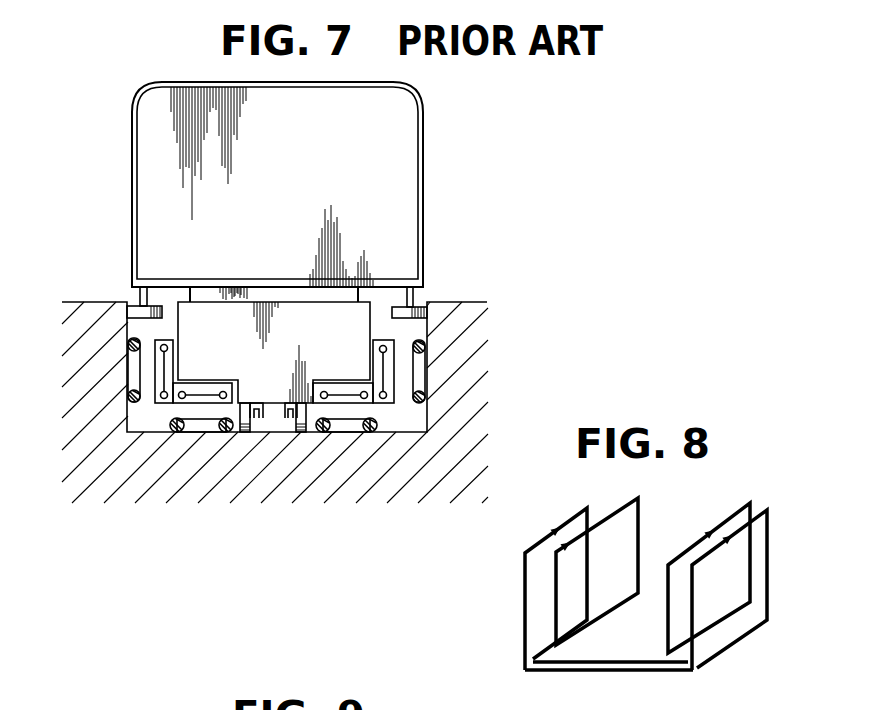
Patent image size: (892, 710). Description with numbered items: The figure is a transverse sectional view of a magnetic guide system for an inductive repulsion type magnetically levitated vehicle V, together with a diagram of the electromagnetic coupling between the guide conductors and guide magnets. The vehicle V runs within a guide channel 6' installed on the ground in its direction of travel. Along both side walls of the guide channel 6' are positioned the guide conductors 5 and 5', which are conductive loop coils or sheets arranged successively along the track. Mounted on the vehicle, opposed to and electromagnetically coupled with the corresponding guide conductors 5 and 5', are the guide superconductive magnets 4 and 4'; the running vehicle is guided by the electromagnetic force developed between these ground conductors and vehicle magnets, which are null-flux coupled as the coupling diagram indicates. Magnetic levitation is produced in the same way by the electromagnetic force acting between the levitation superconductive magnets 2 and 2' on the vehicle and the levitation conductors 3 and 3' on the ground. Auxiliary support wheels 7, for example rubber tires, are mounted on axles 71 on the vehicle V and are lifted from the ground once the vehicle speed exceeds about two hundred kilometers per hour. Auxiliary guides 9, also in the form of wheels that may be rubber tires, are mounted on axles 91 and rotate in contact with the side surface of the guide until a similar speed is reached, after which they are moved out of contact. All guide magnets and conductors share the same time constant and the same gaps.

In FIG. 7, the vehicle V is at (420, 152).
In FIG. 7, the auxiliary guides 9 is at (135, 306).
In FIG. 7, the axles 91 is at (150, 298).
In FIG. 7, the guide conductor 5 is at (117, 370).
In FIG. 8, the guide conductor 5 is at (556, 580).
In FIG. 7, the guide conductor 5' is at (439, 371).
In FIG. 8, the guide conductor 5' is at (744, 590).
In FIG. 7, the guide superconductive magnet 4 is at (180, 366).
In FIG. 8, the guide superconductive magnet 4 is at (597, 561).
In FIG. 7, the guide superconductive magnet 4' is at (368, 363).
In FIG. 8, the guide superconductive magnet 4' is at (709, 564).
In FIG. 7, the levitation superconductive magnet 2 is at (202, 374).
In FIG. 7, the levitation superconductive magnet 2' is at (343, 373).
In FIG. 7, the axles 71 is at (286, 404).
In FIG. 7, the auxiliary support wheels 7 is at (245, 432).
In FIG. 7, the levitation conductor 3 is at (201, 443).
In FIG. 7, the levitation conductor 3' is at (346, 443).
In FIG. 7, the guide channel 6' is at (275, 402).